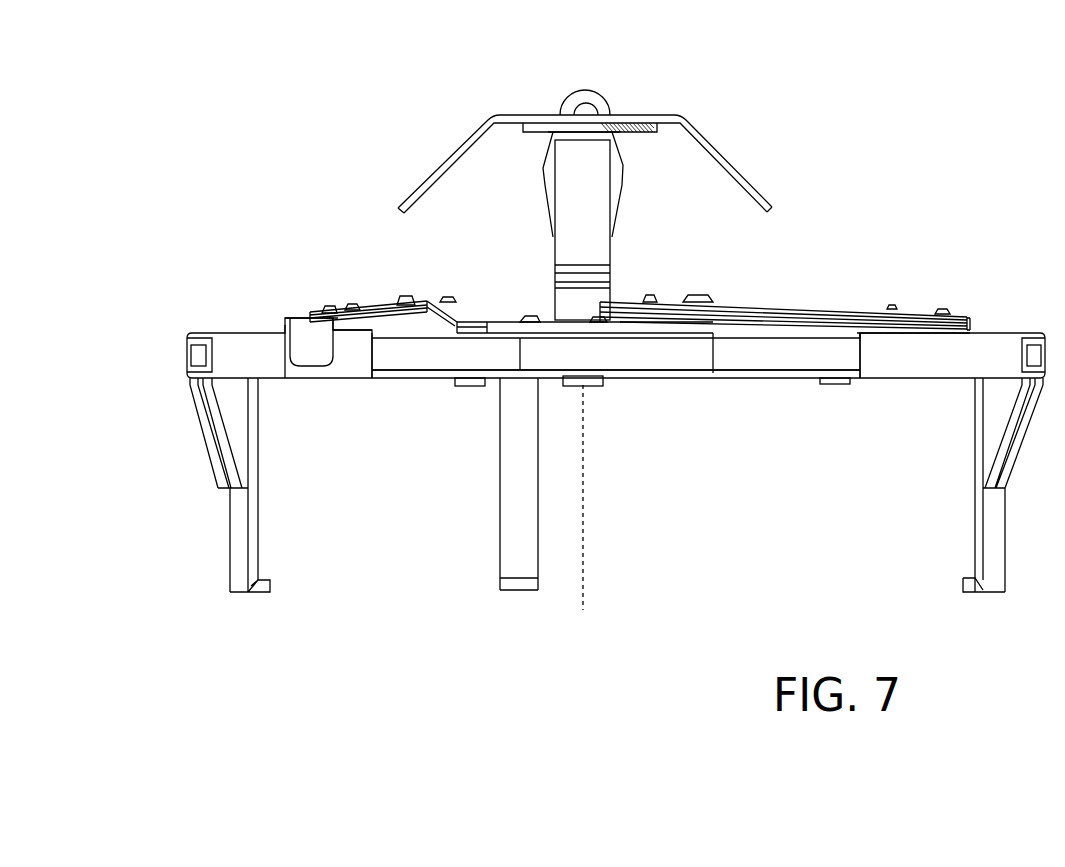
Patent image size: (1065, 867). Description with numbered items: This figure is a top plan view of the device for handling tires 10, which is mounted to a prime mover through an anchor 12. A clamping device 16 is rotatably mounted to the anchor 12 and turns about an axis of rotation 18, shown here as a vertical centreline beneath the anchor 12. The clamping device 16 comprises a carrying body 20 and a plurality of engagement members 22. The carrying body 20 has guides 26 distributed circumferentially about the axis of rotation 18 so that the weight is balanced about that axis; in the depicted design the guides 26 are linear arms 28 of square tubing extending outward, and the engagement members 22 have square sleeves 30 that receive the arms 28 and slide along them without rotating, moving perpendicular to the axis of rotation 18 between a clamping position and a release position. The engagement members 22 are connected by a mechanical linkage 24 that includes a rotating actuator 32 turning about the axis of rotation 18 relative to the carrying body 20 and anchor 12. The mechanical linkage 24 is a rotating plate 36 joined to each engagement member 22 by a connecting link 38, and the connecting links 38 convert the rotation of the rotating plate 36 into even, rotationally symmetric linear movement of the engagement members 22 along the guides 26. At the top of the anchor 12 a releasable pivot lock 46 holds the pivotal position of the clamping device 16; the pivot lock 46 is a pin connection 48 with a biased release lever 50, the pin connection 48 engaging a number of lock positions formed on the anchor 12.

The device for handling tires 10 is at (238, 171).
The anchor 12 is at (583, 197).
The clamping device 16 is at (508, 530).
The axis of rotation 18 is at (585, 560).
The carrying body 20 is at (858, 346).
The engagement members 22 is at (240, 582).
The mechanical linkage 24 is at (383, 310).
The guides 26 is at (440, 355).
The arms 28 is at (467, 360).
The sleeves 30 is at (270, 353).
The rotating actuator 32 is at (612, 324).
The rotating plate 36 is at (474, 322).
The connecting links 38 is at (345, 320).
The releasable pivot lock 46 is at (564, 118).
The pin connection 48 is at (587, 104).
The biased release lever 50 is at (735, 178).